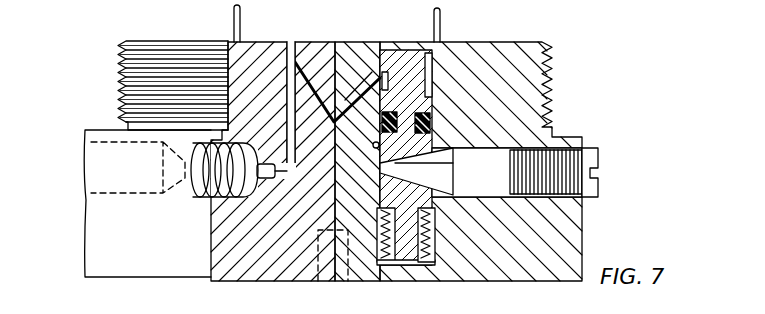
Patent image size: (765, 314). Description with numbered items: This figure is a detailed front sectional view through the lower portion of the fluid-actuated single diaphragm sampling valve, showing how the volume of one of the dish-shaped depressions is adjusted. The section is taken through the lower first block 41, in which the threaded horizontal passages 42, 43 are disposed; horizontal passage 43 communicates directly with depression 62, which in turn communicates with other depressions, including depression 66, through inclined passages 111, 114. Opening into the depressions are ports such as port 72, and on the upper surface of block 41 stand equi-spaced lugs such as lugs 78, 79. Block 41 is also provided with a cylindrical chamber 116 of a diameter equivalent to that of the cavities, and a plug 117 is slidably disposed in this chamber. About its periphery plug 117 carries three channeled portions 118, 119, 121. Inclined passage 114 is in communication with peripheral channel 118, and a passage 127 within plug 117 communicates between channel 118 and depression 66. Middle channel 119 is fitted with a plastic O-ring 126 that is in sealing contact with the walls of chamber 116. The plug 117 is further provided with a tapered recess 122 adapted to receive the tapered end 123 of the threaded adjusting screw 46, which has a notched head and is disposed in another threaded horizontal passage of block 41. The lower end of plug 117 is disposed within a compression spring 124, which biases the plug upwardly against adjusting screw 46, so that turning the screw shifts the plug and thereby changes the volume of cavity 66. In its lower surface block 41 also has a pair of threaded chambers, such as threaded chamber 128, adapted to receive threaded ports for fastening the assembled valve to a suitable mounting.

The lower first block 41 is at (85, 213).
The threaded horizontal passage 42 is at (91, 183).
The threaded horizontal passage 43 is at (198, 193).
The adjusting screw 46 is at (596, 198).
The depression 62 is at (318, 44).
The depression 66 is at (410, 48).
The port 72 is at (292, 44).
The lug 78 is at (234, 28).
The lug 79 is at (440, 30).
The inclined passage 111 is at (337, 105).
The inclined passage 114 is at (357, 88).
The cylindrical chamber 116 is at (445, 200).
The plug 117 is at (414, 66).
The channeled portion 118 is at (430, 82).
The middle channel 119 is at (432, 142).
The channeled portion 121 is at (410, 264).
The tapered recess 122 is at (374, 144).
The tapered end 123 is at (405, 156).
The compression spring 124 is at (422, 266).
The plastic O-ring 126 is at (432, 111).
The passage 127 is at (438, 57).
The threaded chamber 128 is at (316, 283).